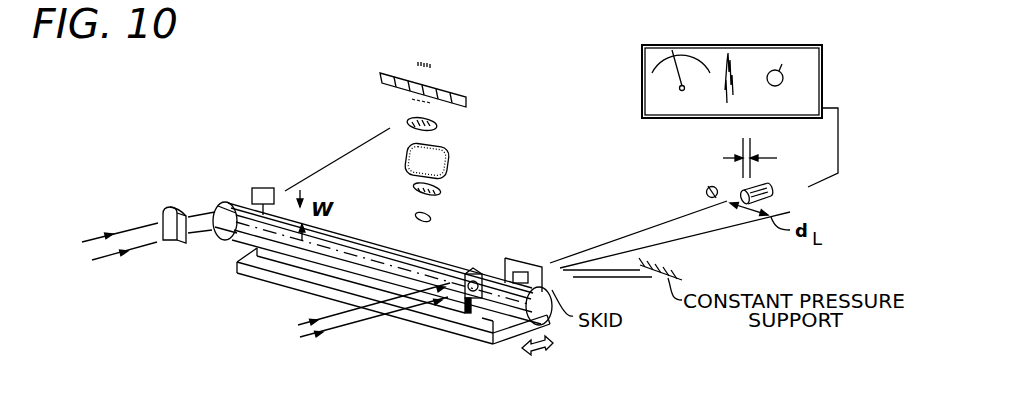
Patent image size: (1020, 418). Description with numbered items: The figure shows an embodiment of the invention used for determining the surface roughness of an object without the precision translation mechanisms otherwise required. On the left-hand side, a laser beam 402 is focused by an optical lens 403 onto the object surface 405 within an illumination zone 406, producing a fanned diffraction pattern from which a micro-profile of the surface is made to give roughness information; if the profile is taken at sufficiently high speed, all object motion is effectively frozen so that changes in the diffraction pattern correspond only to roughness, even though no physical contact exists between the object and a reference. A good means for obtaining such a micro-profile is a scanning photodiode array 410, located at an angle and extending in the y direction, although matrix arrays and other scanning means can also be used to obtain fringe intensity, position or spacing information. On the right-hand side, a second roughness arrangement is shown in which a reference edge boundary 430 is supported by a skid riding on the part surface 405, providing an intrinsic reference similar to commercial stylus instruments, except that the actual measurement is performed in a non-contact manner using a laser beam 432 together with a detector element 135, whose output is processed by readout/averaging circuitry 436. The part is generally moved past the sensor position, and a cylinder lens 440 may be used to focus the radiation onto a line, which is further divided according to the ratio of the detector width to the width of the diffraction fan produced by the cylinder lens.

The laser beam 402 is at (142, 247).
The optical lens 403 is at (173, 205).
The object surface 405 is at (355, 240).
The illumination zone 406 is at (257, 219).
The scanning photodiode array 410 is at (440, 92).
The reference edge boundary 430 is at (530, 238).
The laser beam 432 is at (333, 329).
The readout/averaging circuitry 436 is at (642, 60).
The cylinder lens 440 is at (496, 298).
The probe 135 is at (773, 184).